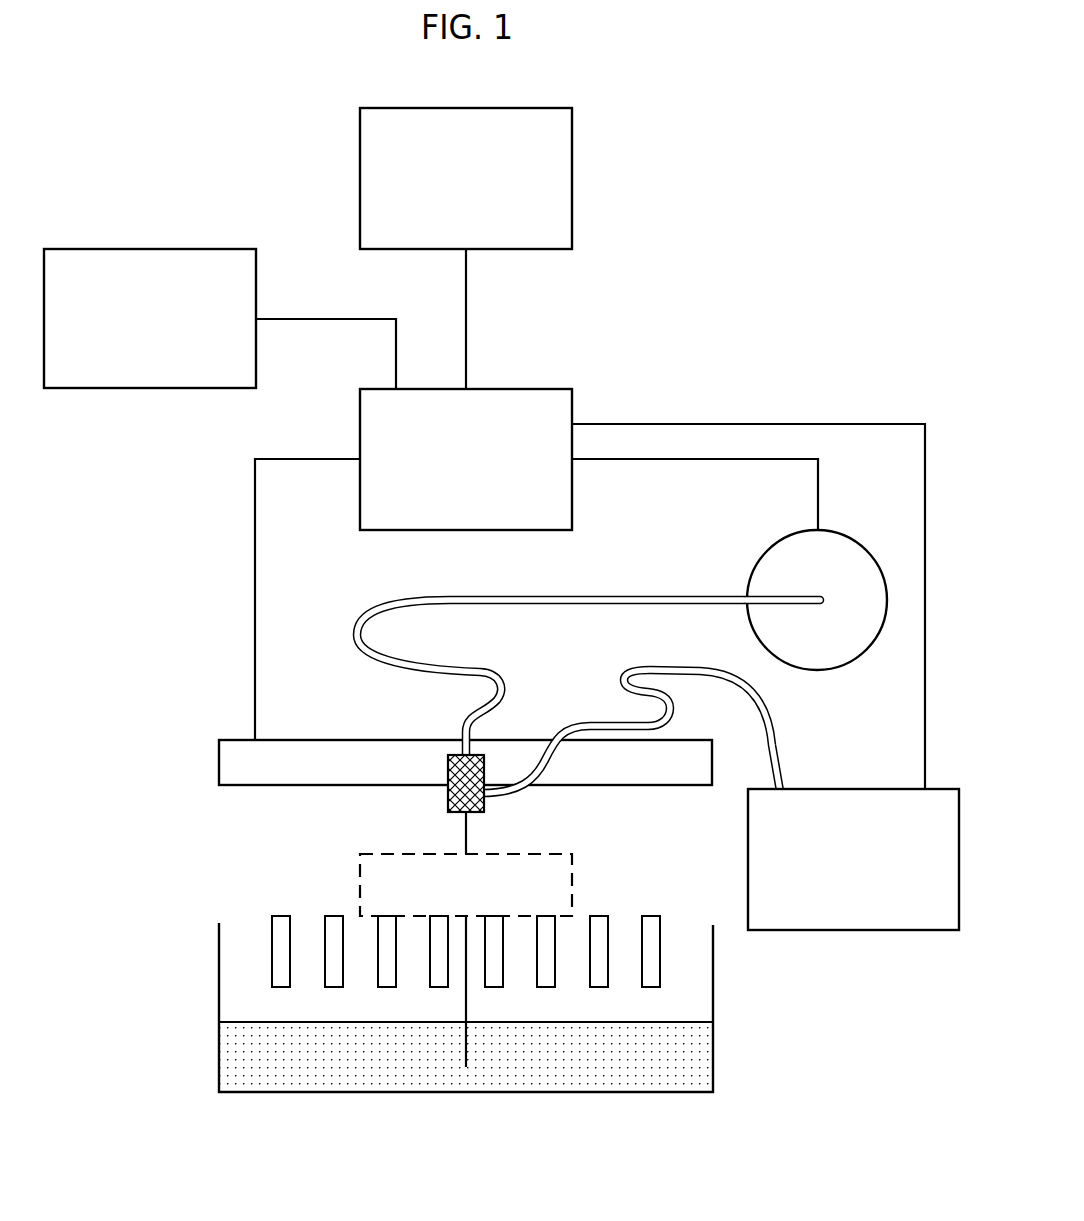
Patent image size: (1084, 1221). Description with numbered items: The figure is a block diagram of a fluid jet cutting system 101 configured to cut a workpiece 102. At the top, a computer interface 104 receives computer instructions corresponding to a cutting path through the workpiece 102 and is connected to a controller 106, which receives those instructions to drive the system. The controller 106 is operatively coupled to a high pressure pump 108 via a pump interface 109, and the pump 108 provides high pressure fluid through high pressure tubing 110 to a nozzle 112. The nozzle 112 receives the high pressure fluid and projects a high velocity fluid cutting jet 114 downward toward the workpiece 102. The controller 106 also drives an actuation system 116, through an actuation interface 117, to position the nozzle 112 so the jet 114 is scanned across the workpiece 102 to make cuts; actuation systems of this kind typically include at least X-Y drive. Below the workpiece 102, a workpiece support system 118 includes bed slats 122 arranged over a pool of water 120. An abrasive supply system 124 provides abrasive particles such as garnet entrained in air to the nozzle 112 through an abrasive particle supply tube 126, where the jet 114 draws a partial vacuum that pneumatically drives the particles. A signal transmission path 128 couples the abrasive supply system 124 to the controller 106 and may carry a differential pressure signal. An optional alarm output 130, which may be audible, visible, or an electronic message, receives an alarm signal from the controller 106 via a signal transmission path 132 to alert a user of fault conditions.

The fluid jet cutting system 101 is at (730, 309).
The workpiece 102 is at (447, 911).
The computer interface 104 is at (486, 204).
The controller 106 is at (447, 485).
The high pressure pump 108 is at (818, 670).
The pump interface 109 is at (662, 460).
The high pressure tubing 110 is at (497, 680).
The nozzle 112 is at (448, 812).
The fluid cutting jet 114 is at (466, 1003).
The actuation system 116 is at (219, 764).
The actuation interface 117 is at (255, 612).
The workpiece support system 118 is at (713, 985).
The pool of water 120 is at (695, 1057).
The bed slats 122 is at (380, 988).
The abrasive supply system 124 is at (835, 912).
The abrasive particle supply tube 126 is at (640, 665).
The signal transmission path 128 is at (745, 424).
The alarm output 130 is at (132, 345).
The signal transmission path 132 is at (305, 319).